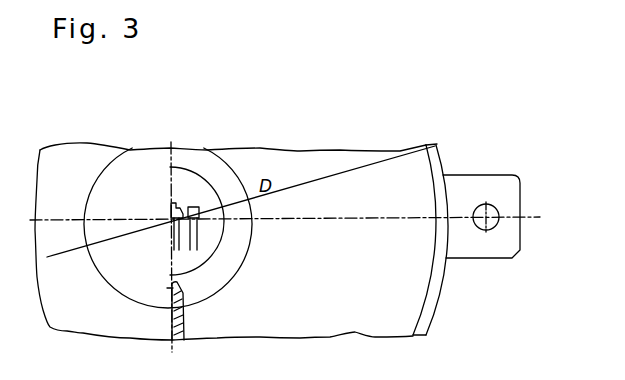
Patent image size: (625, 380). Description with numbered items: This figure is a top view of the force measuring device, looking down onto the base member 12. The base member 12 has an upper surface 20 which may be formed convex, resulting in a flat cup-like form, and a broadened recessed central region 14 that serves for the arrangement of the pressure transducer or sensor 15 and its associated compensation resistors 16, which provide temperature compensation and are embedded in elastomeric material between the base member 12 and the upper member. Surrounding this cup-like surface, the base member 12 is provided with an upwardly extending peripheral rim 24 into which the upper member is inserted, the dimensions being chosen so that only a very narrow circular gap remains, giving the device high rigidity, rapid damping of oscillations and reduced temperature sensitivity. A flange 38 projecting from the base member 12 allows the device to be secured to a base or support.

The base member 12 is at (333, 163).
The broadened recessed central region 14 is at (227, 180).
The pressure transducer or sensor 15 is at (168, 202).
The compensation resistors 16 is at (194, 205).
The upper surface of the base member 20 is at (285, 160).
The peripheral rim 24 is at (445, 157).
The flange 38 is at (473, 180).